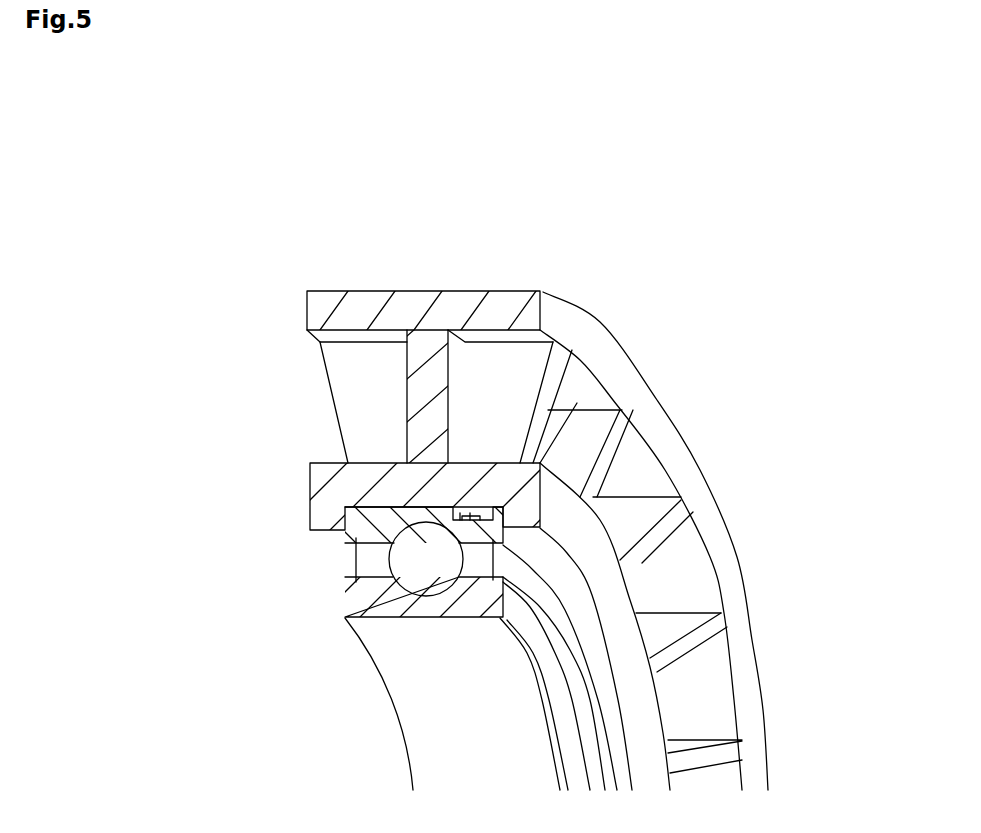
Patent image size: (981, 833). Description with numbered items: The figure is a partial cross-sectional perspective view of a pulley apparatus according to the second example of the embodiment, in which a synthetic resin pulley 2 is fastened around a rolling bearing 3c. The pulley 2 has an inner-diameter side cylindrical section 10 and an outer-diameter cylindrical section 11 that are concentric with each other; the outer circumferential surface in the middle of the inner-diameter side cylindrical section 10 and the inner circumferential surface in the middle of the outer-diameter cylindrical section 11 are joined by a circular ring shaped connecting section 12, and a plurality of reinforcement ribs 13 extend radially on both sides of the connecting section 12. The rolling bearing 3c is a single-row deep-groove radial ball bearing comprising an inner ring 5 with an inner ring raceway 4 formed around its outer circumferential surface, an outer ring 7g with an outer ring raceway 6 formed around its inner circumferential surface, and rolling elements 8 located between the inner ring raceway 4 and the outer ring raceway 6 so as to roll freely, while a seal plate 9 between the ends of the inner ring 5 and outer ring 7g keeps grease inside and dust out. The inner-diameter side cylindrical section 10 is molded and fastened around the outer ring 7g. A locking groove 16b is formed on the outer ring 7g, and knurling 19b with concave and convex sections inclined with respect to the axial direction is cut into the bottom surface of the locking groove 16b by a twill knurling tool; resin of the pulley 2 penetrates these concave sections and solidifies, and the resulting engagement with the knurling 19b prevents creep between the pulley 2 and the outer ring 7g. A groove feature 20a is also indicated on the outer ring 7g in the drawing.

The pulley 2 is at (330, 296).
The outer-diameter cylindrical section 11 is at (447, 293).
The connecting section 12 is at (433, 357).
The reinforcement ribs 13 is at (372, 403).
The inner-diameter side cylindrical section 10 is at (308, 503).
The inner ring raceway 4 is at (425, 480).
The inner ring 5 is at (345, 602).
The outer ring raceway 6 is at (318, 540).
The outer ring 7g is at (344, 522).
The rolling elements 8 is at (435, 573).
The seal plate 9 is at (345, 555).
The groove 20a is at (465, 517).
The rolling bearing 3c is at (394, 741).
The locking groove 16b is at (485, 518).
The knurling 19b is at (500, 506).